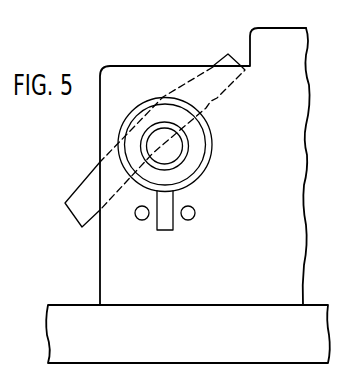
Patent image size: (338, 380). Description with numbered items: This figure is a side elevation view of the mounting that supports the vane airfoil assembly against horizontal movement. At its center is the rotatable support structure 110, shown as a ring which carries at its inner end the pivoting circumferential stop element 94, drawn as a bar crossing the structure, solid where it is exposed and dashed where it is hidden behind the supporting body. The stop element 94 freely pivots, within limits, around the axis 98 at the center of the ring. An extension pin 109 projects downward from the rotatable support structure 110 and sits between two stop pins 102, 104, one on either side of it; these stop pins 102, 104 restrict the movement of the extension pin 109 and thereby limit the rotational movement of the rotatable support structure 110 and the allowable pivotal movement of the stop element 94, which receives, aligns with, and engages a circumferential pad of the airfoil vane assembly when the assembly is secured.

The pivoting circumferential stop element 94 is at (227, 58).
The rotatable support structure 110 is at (210, 133).
The axis 98 is at (167, 148).
The extension pin 109 is at (166, 230).
The stop pin 102 is at (142, 220).
The stop pin 104 is at (195, 217).